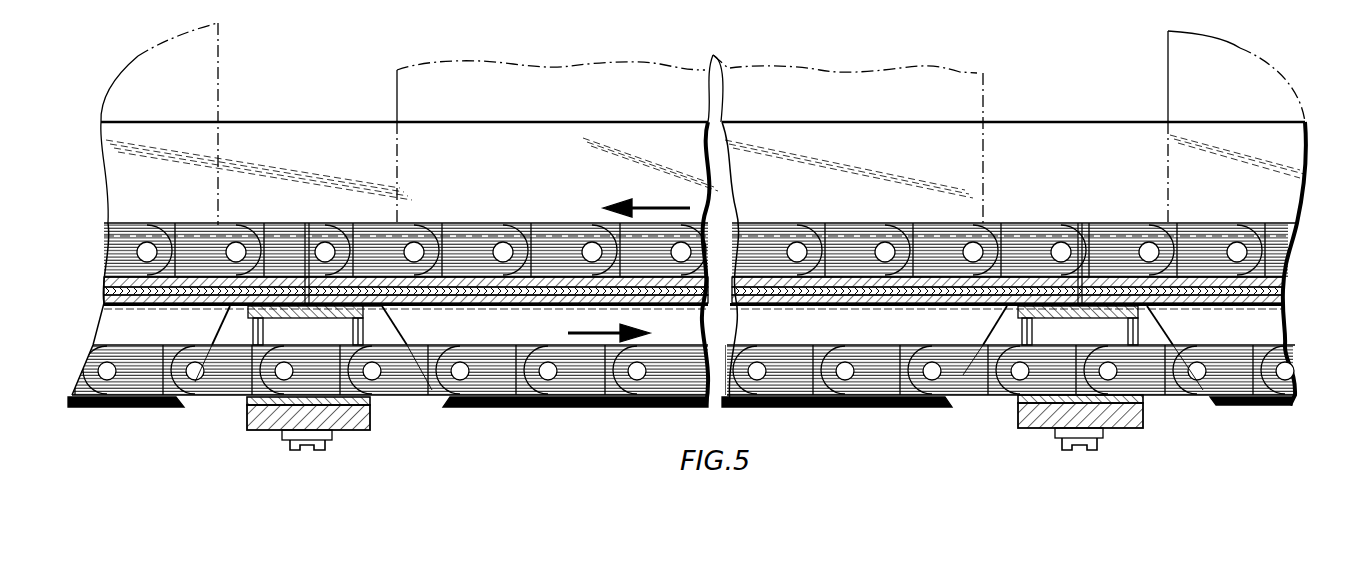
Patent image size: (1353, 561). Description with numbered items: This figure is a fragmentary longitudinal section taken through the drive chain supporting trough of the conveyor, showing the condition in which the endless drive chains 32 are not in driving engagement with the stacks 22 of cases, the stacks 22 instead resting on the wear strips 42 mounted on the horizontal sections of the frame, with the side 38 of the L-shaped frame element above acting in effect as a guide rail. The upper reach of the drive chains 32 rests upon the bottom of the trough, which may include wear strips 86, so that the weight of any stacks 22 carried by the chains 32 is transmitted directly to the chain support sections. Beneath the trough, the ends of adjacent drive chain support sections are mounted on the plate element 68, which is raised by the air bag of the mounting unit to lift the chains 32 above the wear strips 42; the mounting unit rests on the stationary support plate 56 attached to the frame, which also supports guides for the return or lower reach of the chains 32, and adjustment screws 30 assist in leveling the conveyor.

The stacks of cases 22 is at (170, 72).
The side of L-shaped element 38 is at (323, 142).
The wear strips 42 is at (234, 225).
The endless drive chains 32 is at (428, 238).
The wear strips 86 is at (105, 278).
The adjustment screws 30 is at (1283, 288).
The plate element 68 is at (380, 310).
The stationary support plate 56 is at (363, 420).